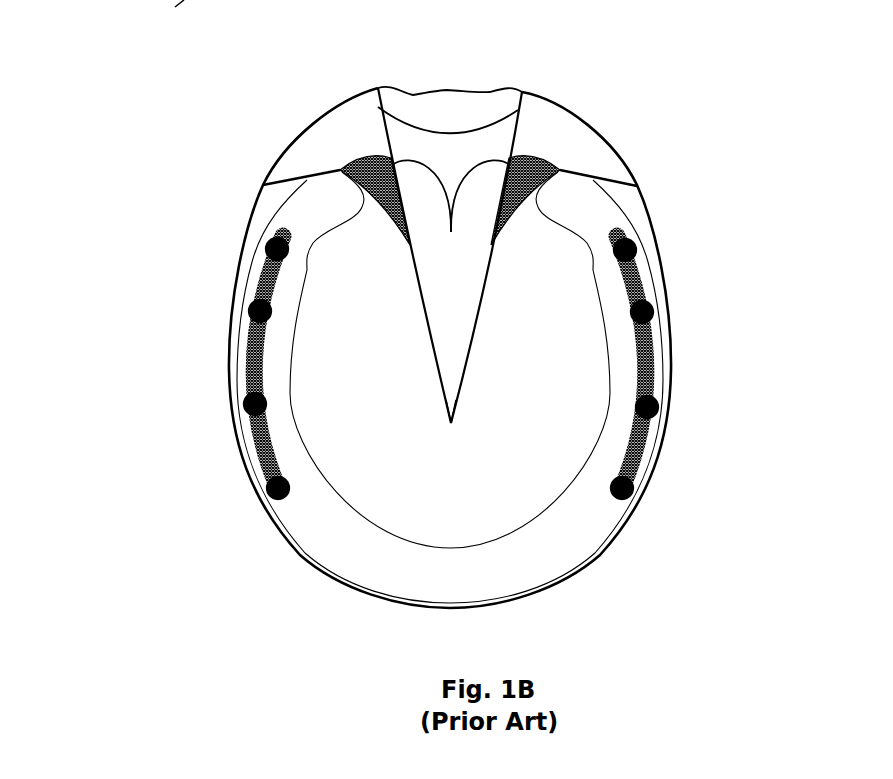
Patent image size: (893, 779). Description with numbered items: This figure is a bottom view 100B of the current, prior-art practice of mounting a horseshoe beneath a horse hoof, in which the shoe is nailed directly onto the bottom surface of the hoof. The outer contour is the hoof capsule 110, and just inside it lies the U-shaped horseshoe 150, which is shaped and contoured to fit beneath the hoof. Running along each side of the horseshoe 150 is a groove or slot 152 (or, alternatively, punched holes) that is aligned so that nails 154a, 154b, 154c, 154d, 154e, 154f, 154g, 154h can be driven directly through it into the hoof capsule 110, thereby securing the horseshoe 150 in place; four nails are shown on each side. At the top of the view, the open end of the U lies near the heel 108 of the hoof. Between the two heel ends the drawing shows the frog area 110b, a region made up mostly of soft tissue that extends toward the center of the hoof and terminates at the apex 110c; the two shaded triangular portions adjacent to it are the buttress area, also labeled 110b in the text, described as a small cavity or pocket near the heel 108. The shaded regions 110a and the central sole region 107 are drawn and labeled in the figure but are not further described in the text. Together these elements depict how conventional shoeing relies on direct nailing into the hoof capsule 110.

The bottom view 100B is at (135, 220).
The sole 107 is at (423, 484).
The heel 108 is at (477, 88).
The hoof capsule 110 is at (642, 223).
The bars 110a is at (537, 160).
The frog area 110b is at (450, 255).
The apex 110c is at (457, 424).
The horseshoe 150 is at (478, 587).
The groove or slot 152 is at (249, 358).
The nail 154a is at (269, 492).
The nail 154b is at (246, 410).
The nail 154c is at (249, 309).
The nail 154d is at (264, 240).
The nail 154e is at (636, 245).
The nail 154f is at (653, 311).
The nail 154g is at (658, 410).
The nail 154h is at (633, 492).